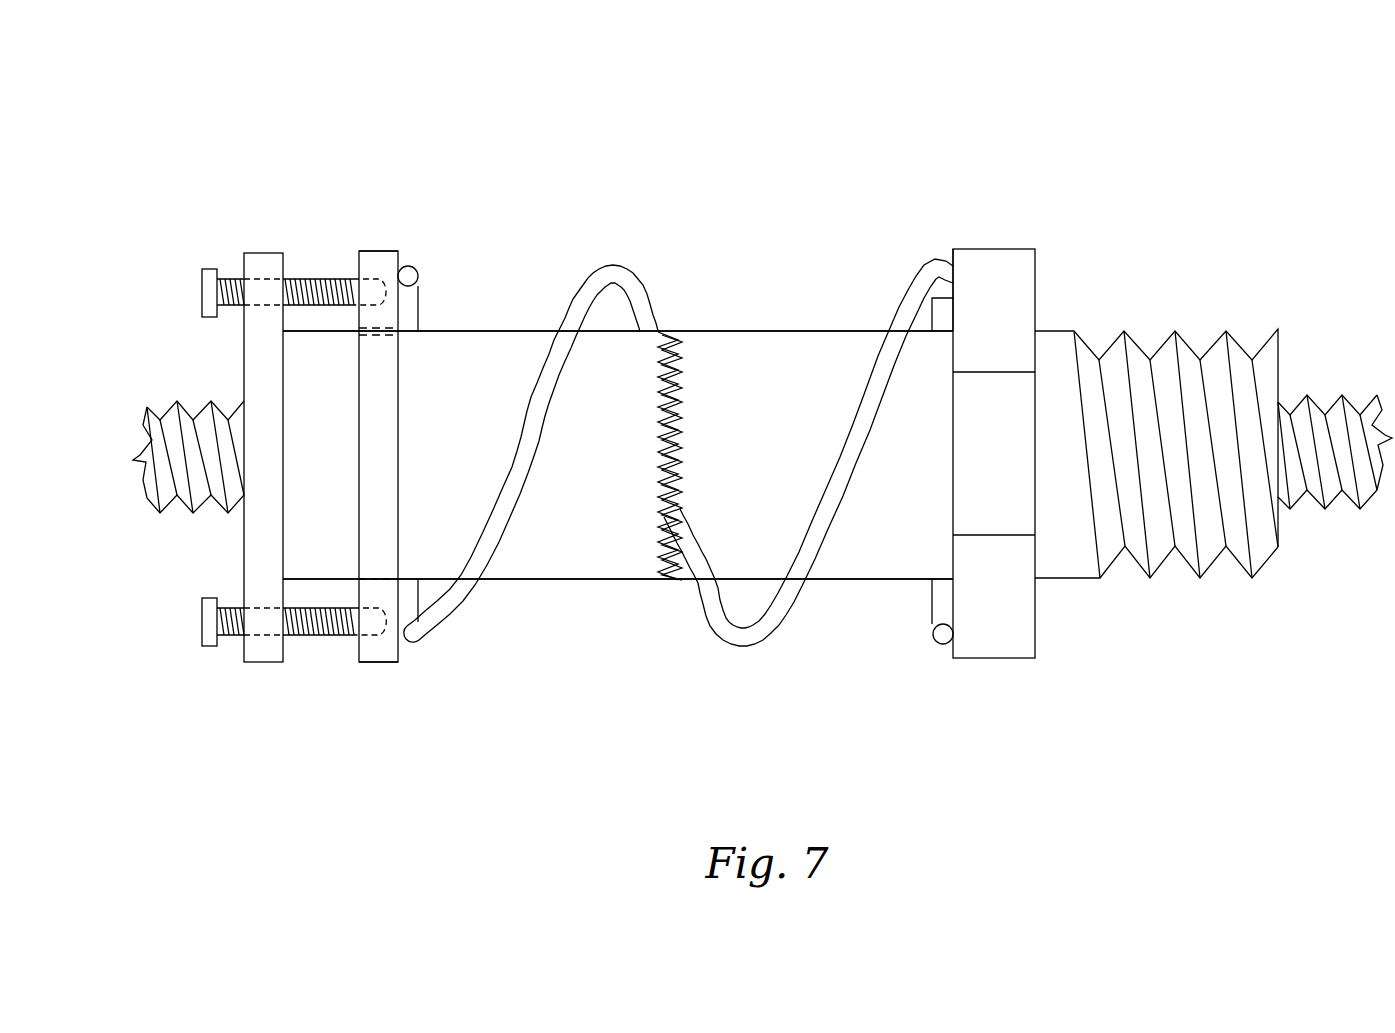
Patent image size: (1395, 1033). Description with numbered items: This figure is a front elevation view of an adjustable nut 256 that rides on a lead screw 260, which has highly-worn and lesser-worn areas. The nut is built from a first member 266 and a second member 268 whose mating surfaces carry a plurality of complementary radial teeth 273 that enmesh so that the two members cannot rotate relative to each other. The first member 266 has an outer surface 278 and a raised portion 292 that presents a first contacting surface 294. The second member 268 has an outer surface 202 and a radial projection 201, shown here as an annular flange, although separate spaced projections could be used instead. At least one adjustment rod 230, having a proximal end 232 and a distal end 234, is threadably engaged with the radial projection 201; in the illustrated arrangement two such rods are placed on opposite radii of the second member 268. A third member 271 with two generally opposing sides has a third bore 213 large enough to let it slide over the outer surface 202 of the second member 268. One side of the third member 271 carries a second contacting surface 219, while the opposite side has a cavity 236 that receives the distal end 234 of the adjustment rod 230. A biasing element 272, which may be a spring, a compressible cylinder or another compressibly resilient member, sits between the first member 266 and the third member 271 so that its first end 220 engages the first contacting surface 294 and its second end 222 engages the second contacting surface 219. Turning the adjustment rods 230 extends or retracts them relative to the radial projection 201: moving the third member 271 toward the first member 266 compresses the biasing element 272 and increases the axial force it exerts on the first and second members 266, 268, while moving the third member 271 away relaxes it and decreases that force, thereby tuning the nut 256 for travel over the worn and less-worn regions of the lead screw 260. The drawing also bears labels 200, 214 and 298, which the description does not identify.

The threaded rod 200 is at (290, 462).
The radial projection 201 is at (255, 397).
The outer surface 202 is at (572, 581).
The third bore 213 is at (382, 572).
The plate 214 is at (378, 251).
The second contacting surface 219 is at (399, 257).
The first end 220 is at (944, 645).
The second end 222 is at (418, 640).
The adjustment rod 230 is at (243, 283).
The proximal end 232 is at (207, 290).
The distal end 234 is at (357, 283).
The cavity 236 is at (377, 303).
The adjustable nut 256 is at (627, 147).
The lead screw 260 is at (1313, 477).
The first member 266 is at (818, 331).
The second member 268 is at (478, 331).
The third member 271 is at (378, 663).
The biasing element 272 is at (590, 265).
The radial teeth 273 is at (660, 331).
The outer surface 278 is at (880, 581).
The raised portion 292 is at (998, 265).
The first contacting surface 294 is at (954, 253).
The housing interior 298 is at (632, 503).